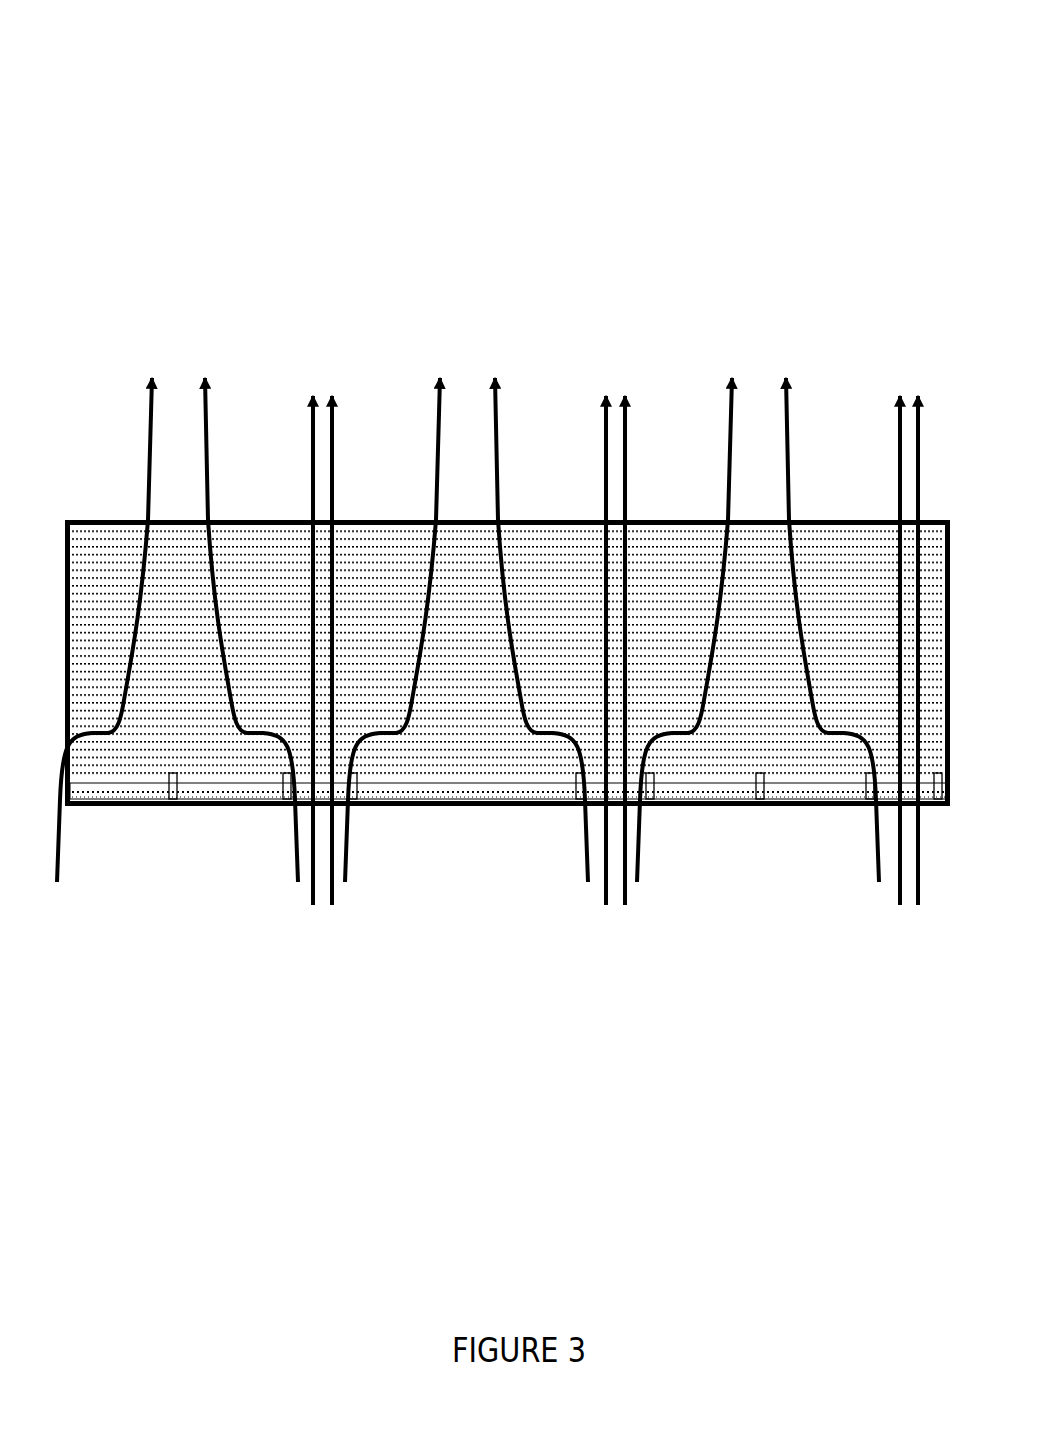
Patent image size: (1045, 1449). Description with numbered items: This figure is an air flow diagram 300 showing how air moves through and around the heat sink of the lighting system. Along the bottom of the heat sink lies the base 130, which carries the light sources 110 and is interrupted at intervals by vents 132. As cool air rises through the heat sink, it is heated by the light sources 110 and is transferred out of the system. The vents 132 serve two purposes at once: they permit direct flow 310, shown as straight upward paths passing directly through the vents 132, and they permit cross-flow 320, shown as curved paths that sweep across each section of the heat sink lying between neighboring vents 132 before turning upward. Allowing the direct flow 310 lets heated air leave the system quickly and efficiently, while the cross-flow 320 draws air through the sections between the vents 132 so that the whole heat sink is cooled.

The air flow diagram 300 is at (147, 160).
The direct flow 310 is at (333, 442).
The cross-flow 320 is at (205, 483).
The light sources 110 is at (228, 795).
The base 130 is at (128, 787).
The vents 132 is at (352, 785).